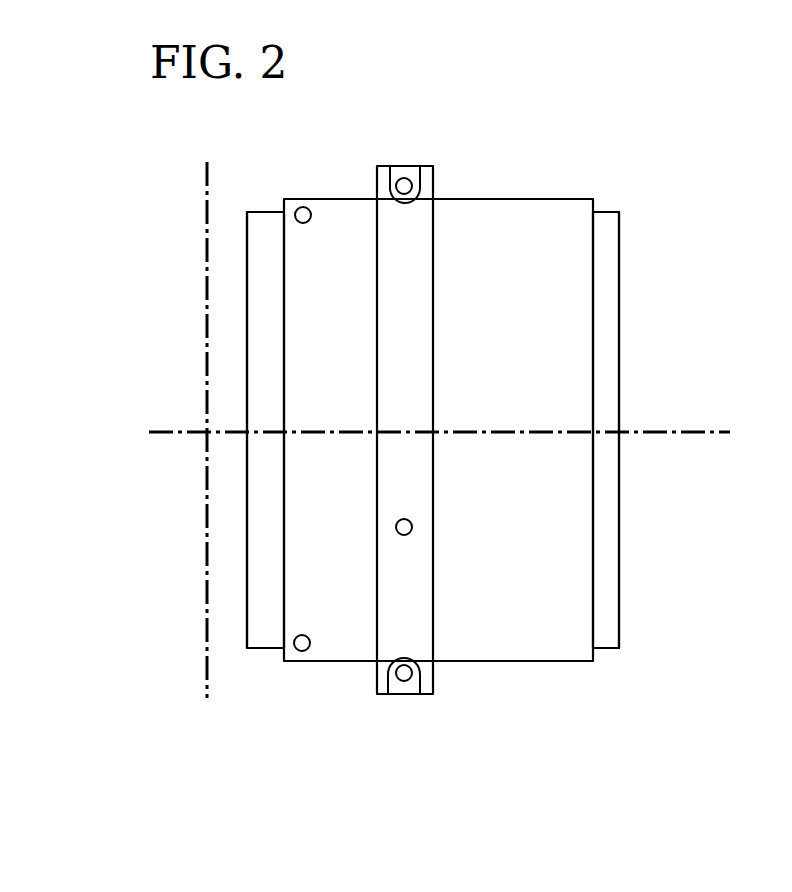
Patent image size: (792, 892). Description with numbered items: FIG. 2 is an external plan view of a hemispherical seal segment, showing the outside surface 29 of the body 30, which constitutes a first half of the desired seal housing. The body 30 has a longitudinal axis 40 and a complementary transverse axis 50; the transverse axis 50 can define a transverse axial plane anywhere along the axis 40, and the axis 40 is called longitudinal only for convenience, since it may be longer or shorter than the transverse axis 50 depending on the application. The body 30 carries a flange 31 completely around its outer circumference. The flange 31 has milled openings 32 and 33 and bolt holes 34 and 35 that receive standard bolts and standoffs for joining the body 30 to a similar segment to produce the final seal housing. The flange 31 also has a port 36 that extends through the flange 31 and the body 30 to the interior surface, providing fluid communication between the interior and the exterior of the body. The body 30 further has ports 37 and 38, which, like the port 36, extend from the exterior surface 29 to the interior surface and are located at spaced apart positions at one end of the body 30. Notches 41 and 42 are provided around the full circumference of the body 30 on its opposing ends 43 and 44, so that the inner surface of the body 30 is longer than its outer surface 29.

The outside surface 29 is at (533, 645).
The body 30 is at (508, 166).
The flange 31 is at (408, 274).
The milled opening 32 is at (400, 177).
The milled opening 33 is at (412, 688).
The bolt hole 34 is at (407, 177).
The bolt hole 35 is at (417, 670).
The port 36 is at (413, 527).
The port 37 is at (305, 207).
The port 38 is at (310, 652).
The longitudinal axis 40 is at (470, 432).
The notch 41 is at (271, 210).
The notch 42 is at (603, 211).
The end 43 is at (246, 558).
The end 44 is at (630, 312).
The transverse axis 50 is at (205, 232).